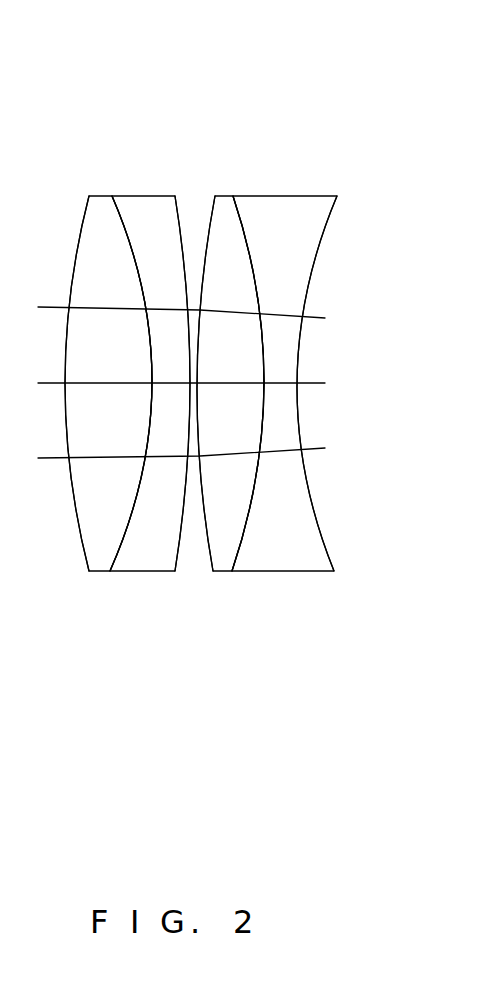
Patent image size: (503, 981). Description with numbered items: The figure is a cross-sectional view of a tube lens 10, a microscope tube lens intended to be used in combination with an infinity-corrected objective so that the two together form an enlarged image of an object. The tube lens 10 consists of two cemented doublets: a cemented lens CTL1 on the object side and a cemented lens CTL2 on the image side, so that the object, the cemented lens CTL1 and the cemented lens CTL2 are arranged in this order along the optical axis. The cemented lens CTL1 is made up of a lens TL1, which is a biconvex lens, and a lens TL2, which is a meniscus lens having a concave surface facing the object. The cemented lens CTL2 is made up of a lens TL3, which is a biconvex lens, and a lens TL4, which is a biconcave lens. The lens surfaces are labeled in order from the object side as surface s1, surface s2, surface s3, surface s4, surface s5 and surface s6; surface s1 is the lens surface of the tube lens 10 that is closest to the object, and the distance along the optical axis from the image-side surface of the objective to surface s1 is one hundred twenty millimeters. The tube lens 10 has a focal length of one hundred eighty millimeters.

The tube lens 10 is at (492, 85).
The cemented lens CTL1 is at (47, 730).
The cemented lens CTL2 is at (357, 730).
The lens TL1 is at (102, 527).
The lens TL2 is at (160, 530).
The lens TL3 is at (222, 535).
The lens TL4 is at (292, 538).
The lens surface s1 is at (83, 233).
The lens surface s2 is at (127, 247).
The lens surface s3 is at (183, 247).
The lens surface s4 is at (208, 247).
The lens surface s5 is at (250, 240).
The lens surface s6 is at (322, 233).